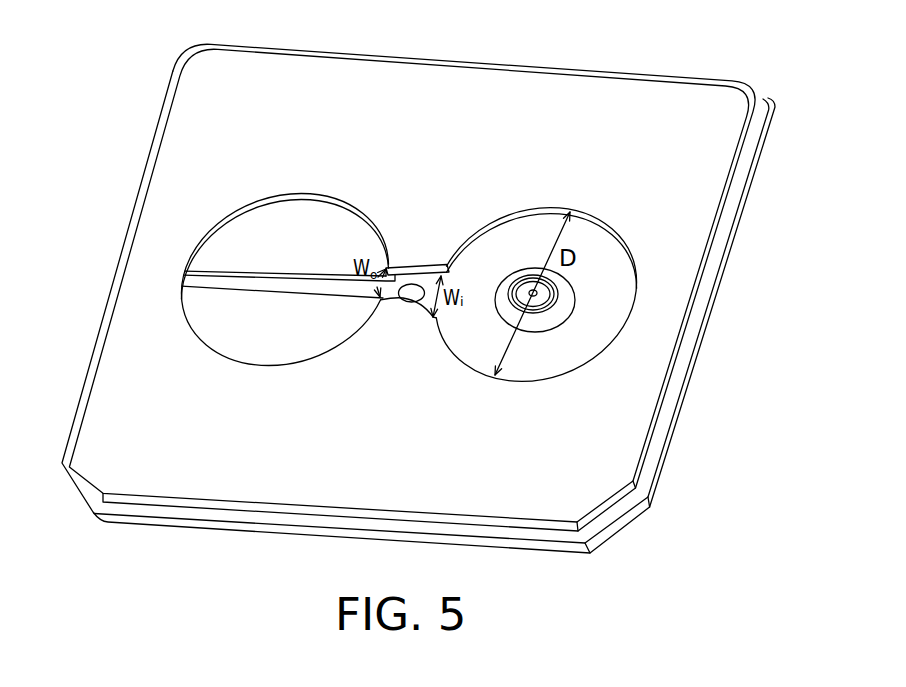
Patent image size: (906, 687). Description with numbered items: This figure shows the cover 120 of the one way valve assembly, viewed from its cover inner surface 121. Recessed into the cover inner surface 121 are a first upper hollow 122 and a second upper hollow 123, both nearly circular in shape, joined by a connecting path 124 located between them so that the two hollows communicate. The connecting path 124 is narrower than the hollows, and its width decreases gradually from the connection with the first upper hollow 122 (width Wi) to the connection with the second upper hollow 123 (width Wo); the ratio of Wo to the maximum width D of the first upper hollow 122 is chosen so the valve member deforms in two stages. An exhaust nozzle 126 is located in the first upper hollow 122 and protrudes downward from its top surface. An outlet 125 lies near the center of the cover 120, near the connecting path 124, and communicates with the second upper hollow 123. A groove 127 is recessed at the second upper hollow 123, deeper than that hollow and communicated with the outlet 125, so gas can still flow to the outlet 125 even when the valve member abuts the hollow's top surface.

The cover 120 is at (146, 19).
The cover inner surface 121 is at (653, 137).
The first upper hollow 122 is at (602, 310).
The second upper hollow 123 is at (297, 343).
The connecting path 124 is at (437, 264).
The outlet 125 is at (412, 302).
The exhaust nozzle 126 is at (545, 318).
The groove 127 is at (248, 290).